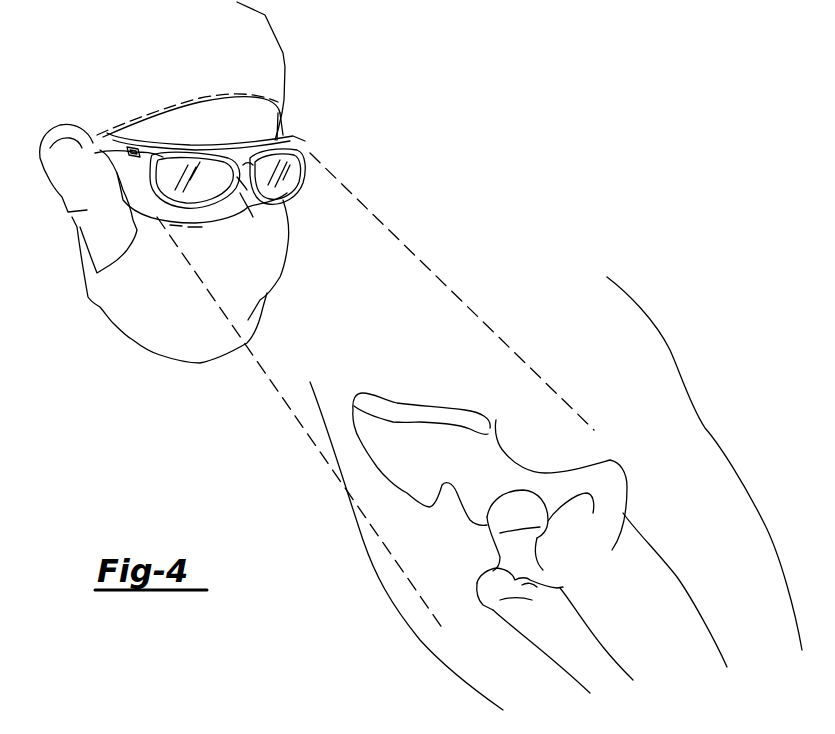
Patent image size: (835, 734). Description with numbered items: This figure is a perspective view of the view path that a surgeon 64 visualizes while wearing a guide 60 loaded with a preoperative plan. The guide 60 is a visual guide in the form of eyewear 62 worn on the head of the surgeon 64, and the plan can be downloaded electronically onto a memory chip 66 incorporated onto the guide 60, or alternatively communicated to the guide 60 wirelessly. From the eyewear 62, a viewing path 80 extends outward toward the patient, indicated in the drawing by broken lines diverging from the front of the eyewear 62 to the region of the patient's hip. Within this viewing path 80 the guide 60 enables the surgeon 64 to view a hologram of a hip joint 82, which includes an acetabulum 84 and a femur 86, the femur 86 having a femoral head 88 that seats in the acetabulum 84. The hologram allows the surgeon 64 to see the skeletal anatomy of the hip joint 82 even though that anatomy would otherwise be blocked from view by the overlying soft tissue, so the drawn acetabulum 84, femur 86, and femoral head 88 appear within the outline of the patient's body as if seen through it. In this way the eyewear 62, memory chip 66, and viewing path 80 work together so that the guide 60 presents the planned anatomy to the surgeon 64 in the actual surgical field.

The guide 60 is at (320, 143).
The eyewear 62 is at (285, 133).
The surgeon 64 is at (267, 72).
The memory chip 66 is at (127, 152).
The viewing path 80 is at (472, 316).
The hip joint 82 is at (478, 553).
The acetabulum 84 is at (496, 420).
The femur 86 is at (537, 622).
The femoral head 88 is at (522, 508).